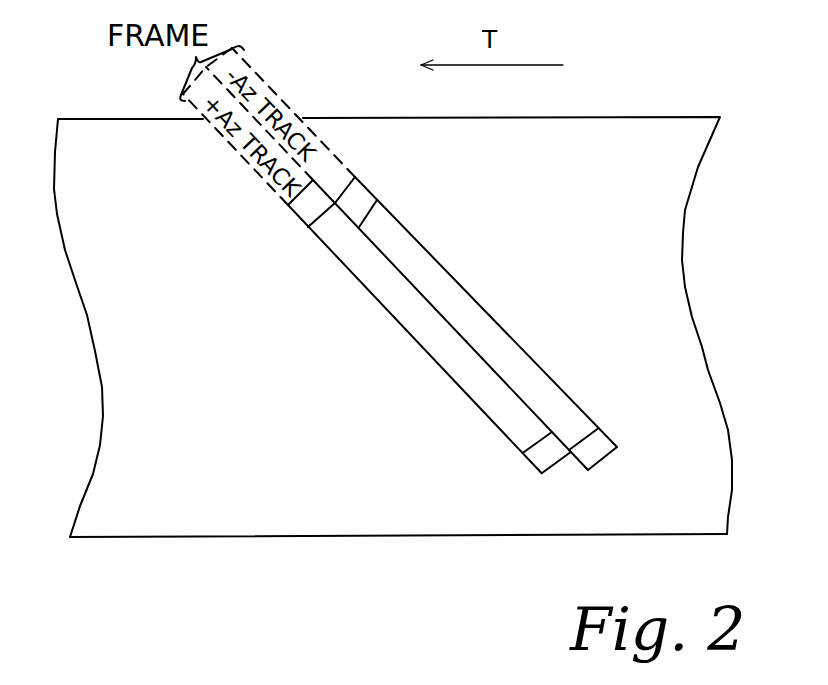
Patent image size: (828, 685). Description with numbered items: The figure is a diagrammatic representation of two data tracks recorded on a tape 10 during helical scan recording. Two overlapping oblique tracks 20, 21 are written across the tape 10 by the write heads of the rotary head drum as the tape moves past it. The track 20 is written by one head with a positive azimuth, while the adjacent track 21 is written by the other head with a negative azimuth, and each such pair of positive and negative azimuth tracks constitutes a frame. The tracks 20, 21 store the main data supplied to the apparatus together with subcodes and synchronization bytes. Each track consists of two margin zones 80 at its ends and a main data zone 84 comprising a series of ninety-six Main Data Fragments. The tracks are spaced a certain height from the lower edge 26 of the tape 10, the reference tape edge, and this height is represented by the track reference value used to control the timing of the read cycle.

The tape 10 is at (632, 117).
The track 20 is at (421, 326).
The track 21 is at (498, 318).
The lower edge 26 is at (388, 537).
The margin zones 80 is at (300, 208).
The main data zone 84 is at (437, 353).